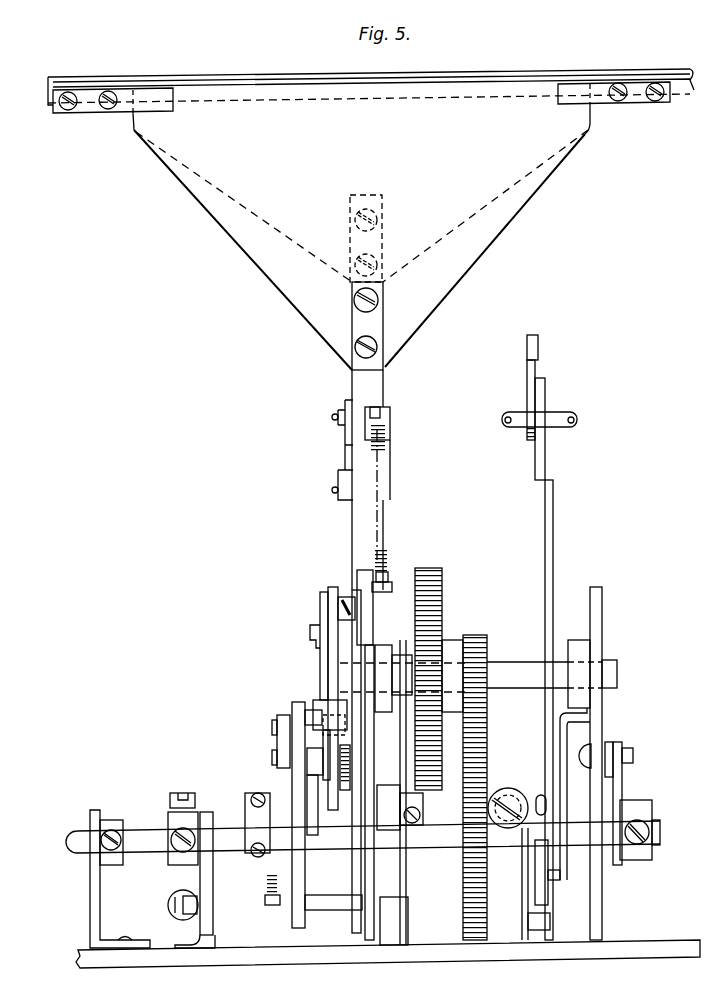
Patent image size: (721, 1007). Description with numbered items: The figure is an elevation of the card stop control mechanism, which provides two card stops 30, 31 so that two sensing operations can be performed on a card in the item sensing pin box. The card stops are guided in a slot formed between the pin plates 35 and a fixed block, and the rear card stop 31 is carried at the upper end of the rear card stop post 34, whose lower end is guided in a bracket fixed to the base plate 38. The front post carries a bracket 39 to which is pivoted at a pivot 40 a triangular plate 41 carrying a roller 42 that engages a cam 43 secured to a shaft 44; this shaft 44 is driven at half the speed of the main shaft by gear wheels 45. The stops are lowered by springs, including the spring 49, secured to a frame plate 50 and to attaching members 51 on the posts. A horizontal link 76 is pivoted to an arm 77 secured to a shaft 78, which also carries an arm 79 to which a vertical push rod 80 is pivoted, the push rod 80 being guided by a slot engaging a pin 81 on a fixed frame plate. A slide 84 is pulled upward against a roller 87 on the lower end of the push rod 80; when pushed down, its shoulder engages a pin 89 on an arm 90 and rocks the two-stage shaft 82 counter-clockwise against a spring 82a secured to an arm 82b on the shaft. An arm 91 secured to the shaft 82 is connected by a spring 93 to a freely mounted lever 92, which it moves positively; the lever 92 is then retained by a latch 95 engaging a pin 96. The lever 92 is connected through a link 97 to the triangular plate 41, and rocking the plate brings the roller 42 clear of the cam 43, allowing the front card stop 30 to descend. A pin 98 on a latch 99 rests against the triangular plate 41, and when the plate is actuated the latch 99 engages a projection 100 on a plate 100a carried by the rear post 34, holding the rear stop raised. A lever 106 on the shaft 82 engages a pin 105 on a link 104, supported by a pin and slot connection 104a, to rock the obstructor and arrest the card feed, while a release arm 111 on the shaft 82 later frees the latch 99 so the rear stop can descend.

The pin plates 35 is at (690, 72).
The front card stop 30 is at (563, 164).
The rear card stop 31 is at (525, 197).
The rear card stop post 34 is at (375, 390).
The attaching members 51 is at (390, 418).
The spring 49 is at (380, 518).
The frame plate 50 is at (362, 582).
The plate 100a is at (358, 640).
The latch 99 is at (352, 640).
The bracket 39 is at (332, 587).
The pivot 40 is at (312, 633).
The triangular plate 41 is at (324, 660).
The projection 100 is at (335, 705).
The pin 98 is at (313, 718).
The link 97 is at (283, 731).
The roller 42 is at (312, 760).
The cam 43 is at (312, 780).
The release arm 111 is at (360, 777).
The gear wheels 45 is at (478, 634).
The horizontal link 76 is at (538, 346).
The arm 77 is at (527, 372).
The arm 79 is at (545, 390).
The shaft 78 is at (560, 422).
The push rod 80 is at (553, 556).
The pin and slot connection 104a is at (592, 746).
The link 104 is at (609, 746).
The pin 105 is at (633, 759).
The lever 106 is at (621, 792).
The pin 81 is at (540, 795).
The roller 87 is at (545, 854).
The arm 90 is at (522, 887).
The pin 89 is at (538, 930).
The slide 84 is at (540, 880).
The shaft 44 is at (443, 816).
The two-stage shaft 82 is at (417, 848).
The spring 82a is at (204, 880).
The arm 82b is at (170, 908).
The arm 91 is at (290, 852).
The spring 93 is at (268, 892).
The lever 92 is at (298, 928).
The pin 96 is at (318, 910).
The latch 95 is at (352, 933).
The base plate 38 is at (382, 956).